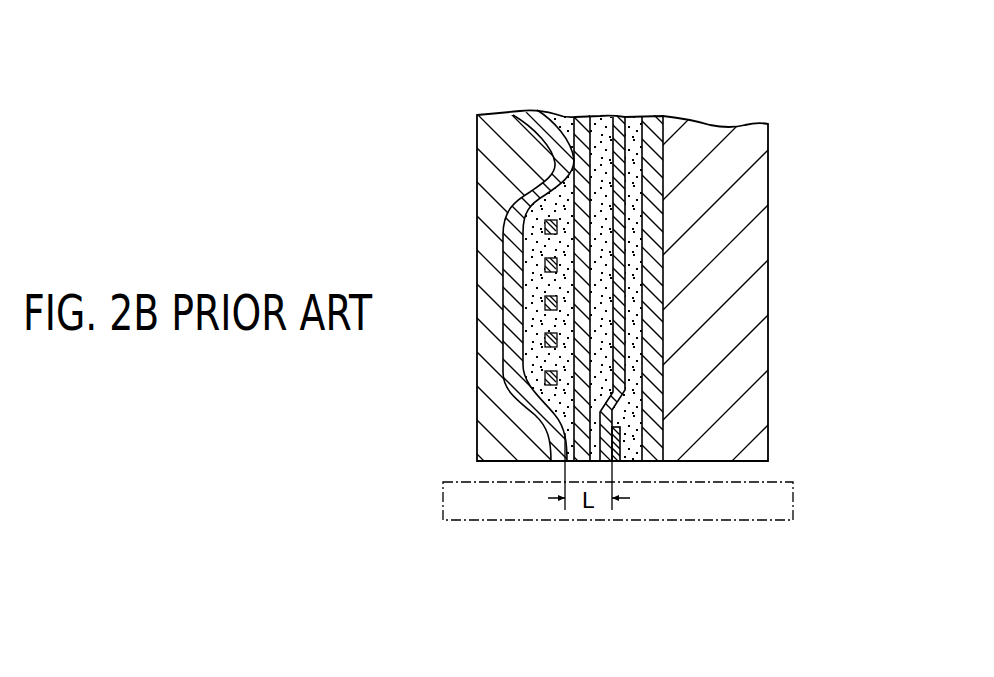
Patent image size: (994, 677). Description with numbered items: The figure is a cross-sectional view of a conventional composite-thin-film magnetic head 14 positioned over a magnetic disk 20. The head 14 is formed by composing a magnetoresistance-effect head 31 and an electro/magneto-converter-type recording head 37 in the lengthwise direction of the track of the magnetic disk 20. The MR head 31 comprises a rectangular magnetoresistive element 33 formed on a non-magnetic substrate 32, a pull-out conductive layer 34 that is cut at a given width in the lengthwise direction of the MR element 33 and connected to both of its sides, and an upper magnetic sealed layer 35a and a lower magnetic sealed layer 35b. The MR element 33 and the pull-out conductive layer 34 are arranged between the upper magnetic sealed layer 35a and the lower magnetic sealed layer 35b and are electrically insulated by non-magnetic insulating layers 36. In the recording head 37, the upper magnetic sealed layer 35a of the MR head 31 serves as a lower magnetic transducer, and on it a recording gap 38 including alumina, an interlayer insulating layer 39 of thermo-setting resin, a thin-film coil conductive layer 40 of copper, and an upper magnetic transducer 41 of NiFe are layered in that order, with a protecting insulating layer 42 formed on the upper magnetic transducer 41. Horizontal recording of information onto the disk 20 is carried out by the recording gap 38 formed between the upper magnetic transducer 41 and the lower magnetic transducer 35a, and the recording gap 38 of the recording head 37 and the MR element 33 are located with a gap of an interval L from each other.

The composite-thin-film magnetic head 14 is at (556, 63).
The magnetic disk 20 is at (793, 497).
The magnetoresistance-effect head 31 is at (778, 553).
The non-magnetic substrate 32 is at (757, 283).
The magnetoresistive element 33 is at (620, 463).
The pull-out conductive layer 34 is at (600, 463).
The upper magnetic sealed layer 35a is at (573, 463).
The lower magnetic sealed layer 35b is at (650, 463).
The non-magnetic insulating layers 36 is at (632, 126).
The recording head 37 is at (593, 555).
The recording gap 38 is at (557, 463).
The interlayer insulating layer 39 is at (510, 208).
The thin-film coil conductive layer 40 is at (533, 227).
The upper magnetic transducer 41 is at (525, 463).
The protecting insulating layer 42 is at (495, 137).